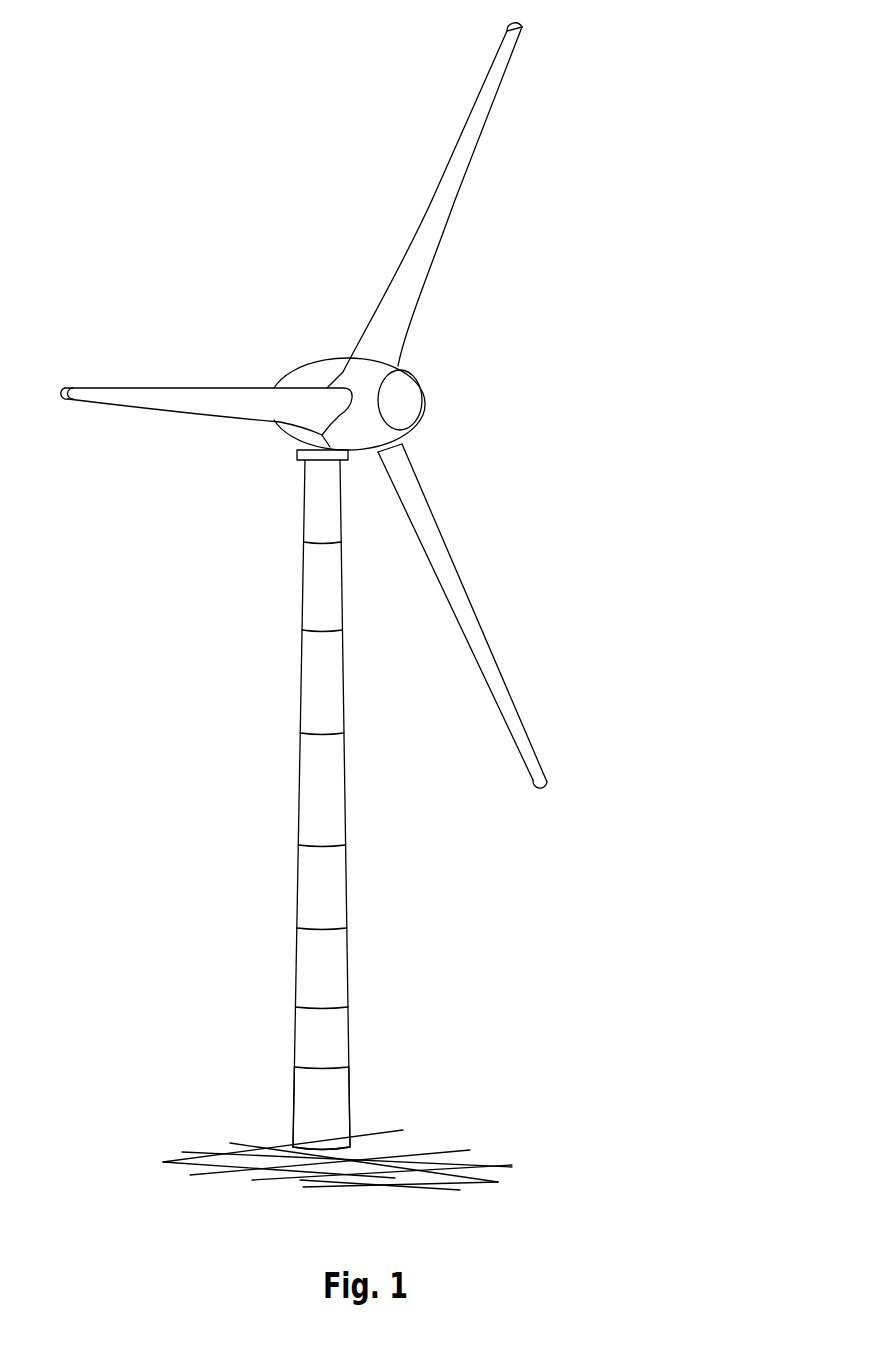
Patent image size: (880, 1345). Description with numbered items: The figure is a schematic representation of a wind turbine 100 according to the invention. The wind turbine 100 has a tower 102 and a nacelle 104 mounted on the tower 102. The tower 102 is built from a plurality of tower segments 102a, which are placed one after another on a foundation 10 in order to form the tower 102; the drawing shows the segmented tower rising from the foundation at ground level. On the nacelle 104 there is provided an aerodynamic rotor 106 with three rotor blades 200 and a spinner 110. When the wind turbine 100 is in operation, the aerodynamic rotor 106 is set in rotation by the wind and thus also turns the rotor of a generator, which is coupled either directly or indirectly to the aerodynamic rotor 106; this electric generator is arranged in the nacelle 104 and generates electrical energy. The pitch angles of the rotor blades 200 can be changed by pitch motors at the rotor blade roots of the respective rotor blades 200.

The foundation 10 is at (425, 1155).
The wind turbine 100 is at (359, 586).
The tower 102 is at (314, 800).
The tower segment 102a is at (302, 1093).
The nacelle 104 is at (318, 376).
The aerodynamic rotor 106 is at (359, 405).
The spinner 110 is at (407, 401).
The rotor blade 200 is at (467, 148).